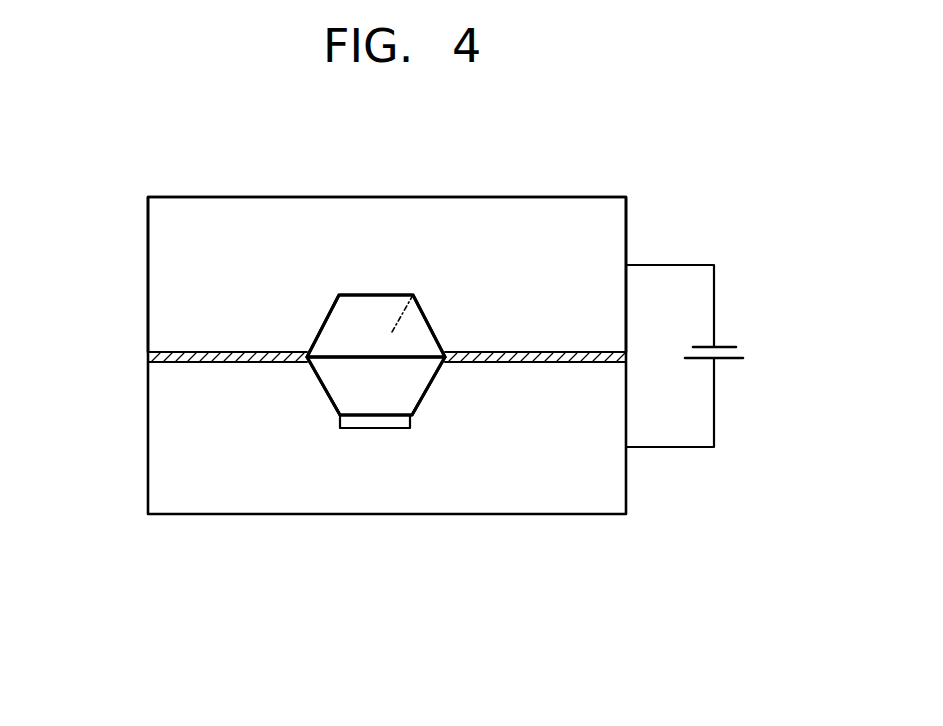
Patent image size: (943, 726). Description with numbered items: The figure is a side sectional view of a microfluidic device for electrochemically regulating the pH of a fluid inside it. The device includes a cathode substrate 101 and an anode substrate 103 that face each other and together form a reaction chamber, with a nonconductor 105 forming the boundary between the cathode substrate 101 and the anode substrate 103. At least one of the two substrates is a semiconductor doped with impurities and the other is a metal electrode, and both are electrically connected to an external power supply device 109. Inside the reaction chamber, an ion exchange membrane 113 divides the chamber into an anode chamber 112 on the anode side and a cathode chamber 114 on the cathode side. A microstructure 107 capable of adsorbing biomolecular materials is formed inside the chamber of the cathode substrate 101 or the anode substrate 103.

The cathode substrate 101 is at (160, 436).
The anode substrate 103 is at (160, 274).
The nonconductor 105 is at (160, 352).
The microstructure 107 is at (392, 422).
The external power supply device 109 is at (728, 360).
The anode chamber 112 is at (412, 295).
The ion exchange membrane 113 is at (378, 356).
The cathode chamber 114 is at (392, 380).